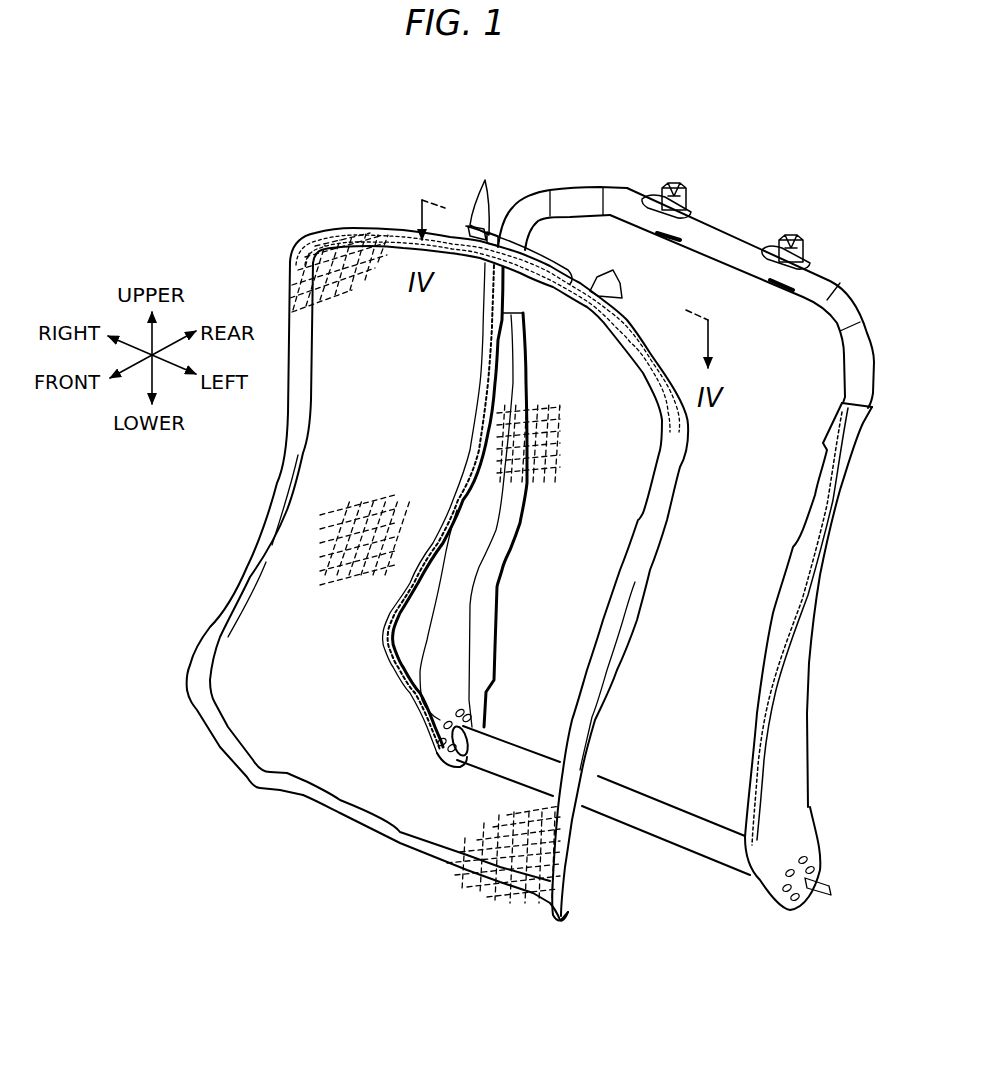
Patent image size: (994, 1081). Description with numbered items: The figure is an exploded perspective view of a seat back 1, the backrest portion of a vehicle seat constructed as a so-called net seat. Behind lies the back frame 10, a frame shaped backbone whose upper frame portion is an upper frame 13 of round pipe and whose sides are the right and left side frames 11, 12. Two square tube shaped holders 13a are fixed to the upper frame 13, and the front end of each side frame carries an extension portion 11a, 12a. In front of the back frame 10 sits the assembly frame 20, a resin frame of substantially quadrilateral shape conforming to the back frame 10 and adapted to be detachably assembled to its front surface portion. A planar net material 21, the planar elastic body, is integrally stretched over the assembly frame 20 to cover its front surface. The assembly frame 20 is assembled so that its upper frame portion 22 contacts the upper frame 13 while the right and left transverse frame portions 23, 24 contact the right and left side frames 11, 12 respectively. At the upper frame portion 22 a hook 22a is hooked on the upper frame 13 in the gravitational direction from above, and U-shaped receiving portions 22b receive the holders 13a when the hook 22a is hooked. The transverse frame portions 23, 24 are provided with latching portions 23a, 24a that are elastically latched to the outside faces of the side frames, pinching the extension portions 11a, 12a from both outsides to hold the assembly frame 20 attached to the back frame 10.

The seat back 1 is at (228, 172).
The back frame 10 is at (576, 194).
The right side frame 11 is at (798, 690).
The extension portion 11a is at (766, 797).
The left side frame 12 is at (467, 582).
The extension portion 12a is at (383, 620).
The upper frame 13 is at (718, 230).
The holder 13a is at (676, 182).
The assembly frame 20 is at (312, 234).
The net material 21 is at (365, 478).
The upper frame portion 22 is at (617, 332).
The hook 22a is at (540, 260).
The U-shaped receiving portion 22b is at (483, 198).
The right transverse frame portion 23 is at (598, 716).
The latching portion 23a is at (588, 757).
The left transverse frame portion 24 is at (252, 562).
The latching portion 24a is at (233, 598).